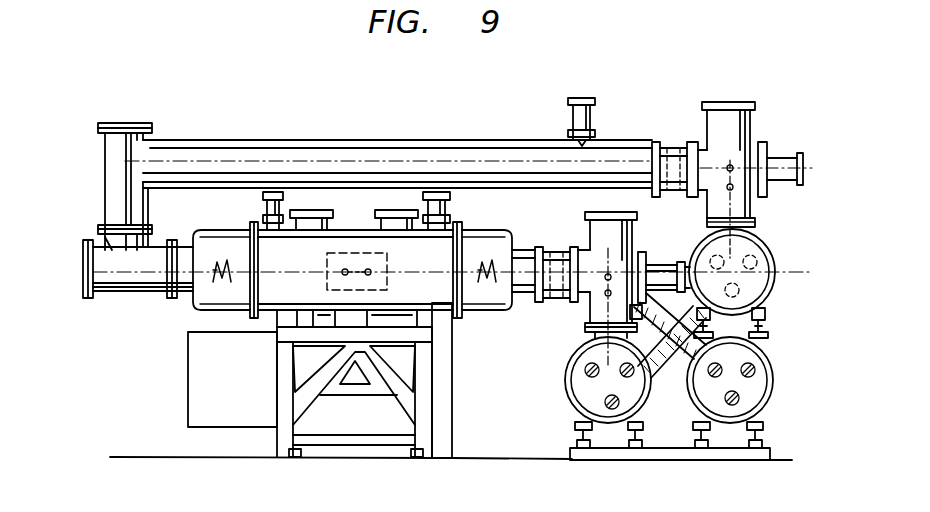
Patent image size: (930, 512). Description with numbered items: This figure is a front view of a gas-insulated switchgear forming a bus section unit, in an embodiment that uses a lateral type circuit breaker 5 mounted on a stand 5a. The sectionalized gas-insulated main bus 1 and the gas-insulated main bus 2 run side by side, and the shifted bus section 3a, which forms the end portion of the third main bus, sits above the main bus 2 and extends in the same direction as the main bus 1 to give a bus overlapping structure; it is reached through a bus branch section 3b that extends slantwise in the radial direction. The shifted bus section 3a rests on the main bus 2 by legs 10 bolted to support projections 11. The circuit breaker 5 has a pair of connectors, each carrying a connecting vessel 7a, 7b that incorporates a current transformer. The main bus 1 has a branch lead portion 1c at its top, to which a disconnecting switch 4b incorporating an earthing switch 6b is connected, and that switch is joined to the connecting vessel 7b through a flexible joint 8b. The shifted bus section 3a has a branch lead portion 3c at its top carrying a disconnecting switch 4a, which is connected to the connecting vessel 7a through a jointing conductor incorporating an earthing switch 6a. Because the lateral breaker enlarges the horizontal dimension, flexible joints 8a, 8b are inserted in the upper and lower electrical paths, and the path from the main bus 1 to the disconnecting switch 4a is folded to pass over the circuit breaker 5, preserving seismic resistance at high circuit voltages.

The gas-insulated main bus 1 is at (568, 394).
The branch lead portion 1c is at (585, 338).
The gas-insulated main bus 2 is at (766, 369).
The shifted bus section 3a is at (770, 251).
The bus branch section 3b is at (672, 388).
The branch lead portion 3c is at (753, 231).
The disconnecting switch 4a is at (751, 128).
The disconnecting switch 4b is at (634, 244).
The circuit breaker 5 is at (443, 314).
The stand 5a is at (423, 426).
The earthing switch 6a is at (592, 98).
The earthing switch 6b is at (663, 267).
The connecting vessel 7a is at (196, 307).
The connecting vessel 7b is at (500, 247).
The flexible joint 8a is at (672, 146).
The flexible joint 8b is at (556, 300).
The legs 10 is at (763, 310).
The support projections 11 is at (765, 336).